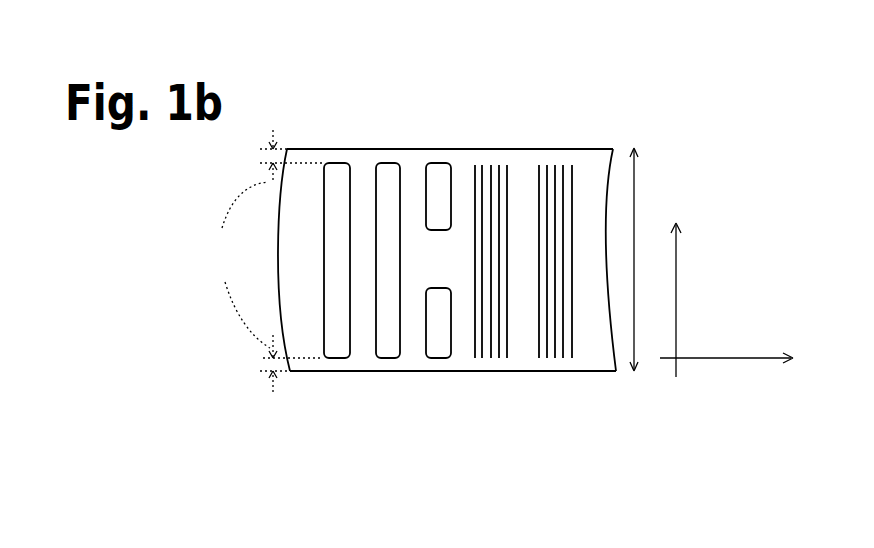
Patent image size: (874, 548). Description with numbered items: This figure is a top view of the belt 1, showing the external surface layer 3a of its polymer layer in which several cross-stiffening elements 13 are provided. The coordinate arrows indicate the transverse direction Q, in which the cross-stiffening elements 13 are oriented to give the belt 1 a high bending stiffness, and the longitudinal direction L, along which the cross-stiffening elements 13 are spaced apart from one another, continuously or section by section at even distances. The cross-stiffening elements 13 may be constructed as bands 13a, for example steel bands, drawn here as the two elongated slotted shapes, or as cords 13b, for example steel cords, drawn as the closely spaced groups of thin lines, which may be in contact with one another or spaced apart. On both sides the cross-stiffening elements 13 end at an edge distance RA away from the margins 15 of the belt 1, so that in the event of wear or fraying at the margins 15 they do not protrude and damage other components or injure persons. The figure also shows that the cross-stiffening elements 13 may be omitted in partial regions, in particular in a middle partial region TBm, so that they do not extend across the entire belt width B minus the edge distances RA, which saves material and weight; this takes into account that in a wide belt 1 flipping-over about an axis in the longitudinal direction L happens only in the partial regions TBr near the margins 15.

The belt 1 is at (700, 118).
The cross-stiffening elements 13 is at (338, 140).
The margins 15 is at (366, 149).
The bands 13a is at (388, 349).
The cords 13b is at (500, 358).
The partial regions near the margins TBr is at (455, 180).
The middle partial region TBm is at (430, 265).
The external surface layer 3a is at (593, 357).
The edge distance RA is at (245, 261).
The belt width B is at (635, 268).
The transverse direction Q is at (695, 279).
The longitudinal direction L is at (747, 367).